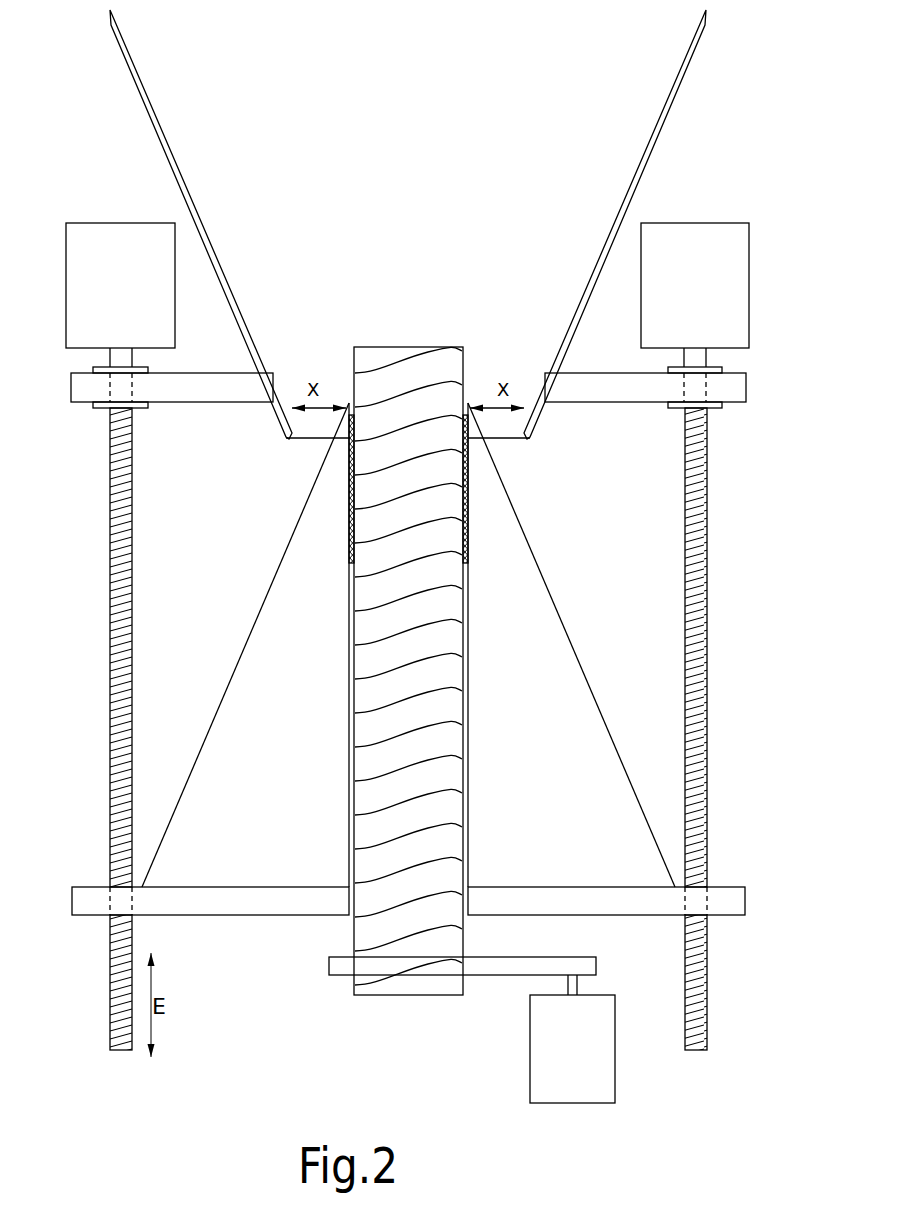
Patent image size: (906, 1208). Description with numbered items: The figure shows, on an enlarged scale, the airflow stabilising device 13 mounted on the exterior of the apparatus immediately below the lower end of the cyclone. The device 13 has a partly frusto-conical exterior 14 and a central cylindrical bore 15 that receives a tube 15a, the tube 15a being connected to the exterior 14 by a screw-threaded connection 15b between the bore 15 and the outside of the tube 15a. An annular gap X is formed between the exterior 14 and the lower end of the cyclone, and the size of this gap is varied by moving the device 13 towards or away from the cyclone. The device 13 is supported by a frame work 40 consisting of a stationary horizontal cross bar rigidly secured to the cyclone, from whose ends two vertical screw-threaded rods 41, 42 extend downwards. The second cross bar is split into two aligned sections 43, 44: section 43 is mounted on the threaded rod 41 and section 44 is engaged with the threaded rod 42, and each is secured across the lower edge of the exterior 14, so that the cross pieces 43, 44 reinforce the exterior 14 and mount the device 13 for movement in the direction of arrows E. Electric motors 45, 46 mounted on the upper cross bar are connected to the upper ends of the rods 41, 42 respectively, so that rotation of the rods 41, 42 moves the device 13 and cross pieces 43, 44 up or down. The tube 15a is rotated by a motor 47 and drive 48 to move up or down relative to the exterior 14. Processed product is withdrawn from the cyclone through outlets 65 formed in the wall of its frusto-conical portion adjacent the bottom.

The airflow stabilising device 13 is at (650, 678).
The partly frusto-conical exterior 14 is at (540, 553).
The central cylindrical bore 15 is at (470, 707).
The tube 15a is at (440, 784).
The screw-threaded connection 15b is at (347, 490).
The frame work 40 is at (737, 557).
The screw-threaded rod 41 is at (112, 600).
The screw-threaded rod 42 is at (700, 647).
The second cross bar section 43 is at (88, 888).
The second cross bar section 44 is at (725, 900).
The electric motor 45 is at (120, 295).
The electric motor 46 is at (695, 295).
The motor 47 is at (572, 1039).
The drive 48 is at (522, 953).
The outlet 65 is at (243, 318).